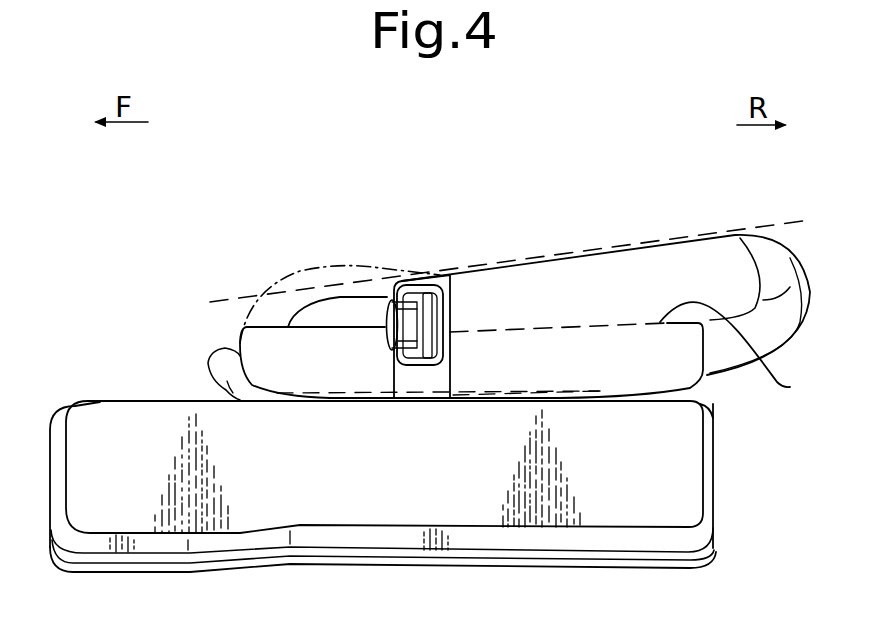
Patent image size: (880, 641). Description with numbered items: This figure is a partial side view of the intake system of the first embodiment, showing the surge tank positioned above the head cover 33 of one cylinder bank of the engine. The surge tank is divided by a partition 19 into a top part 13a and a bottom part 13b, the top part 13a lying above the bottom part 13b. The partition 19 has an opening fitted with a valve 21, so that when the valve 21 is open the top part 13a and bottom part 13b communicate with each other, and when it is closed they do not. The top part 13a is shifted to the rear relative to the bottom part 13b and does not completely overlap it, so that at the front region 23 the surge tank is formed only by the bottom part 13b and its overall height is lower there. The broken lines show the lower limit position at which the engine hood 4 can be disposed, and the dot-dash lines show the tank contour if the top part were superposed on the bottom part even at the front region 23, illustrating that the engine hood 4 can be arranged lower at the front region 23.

The engine hood 4 is at (798, 221).
The top part 13a is at (612, 270).
The bottom part 13b is at (498, 382).
The partition 19 is at (740, 352).
The valve 21 is at (410, 292).
The front region 23 is at (300, 308).
The head cover 33 is at (682, 498).